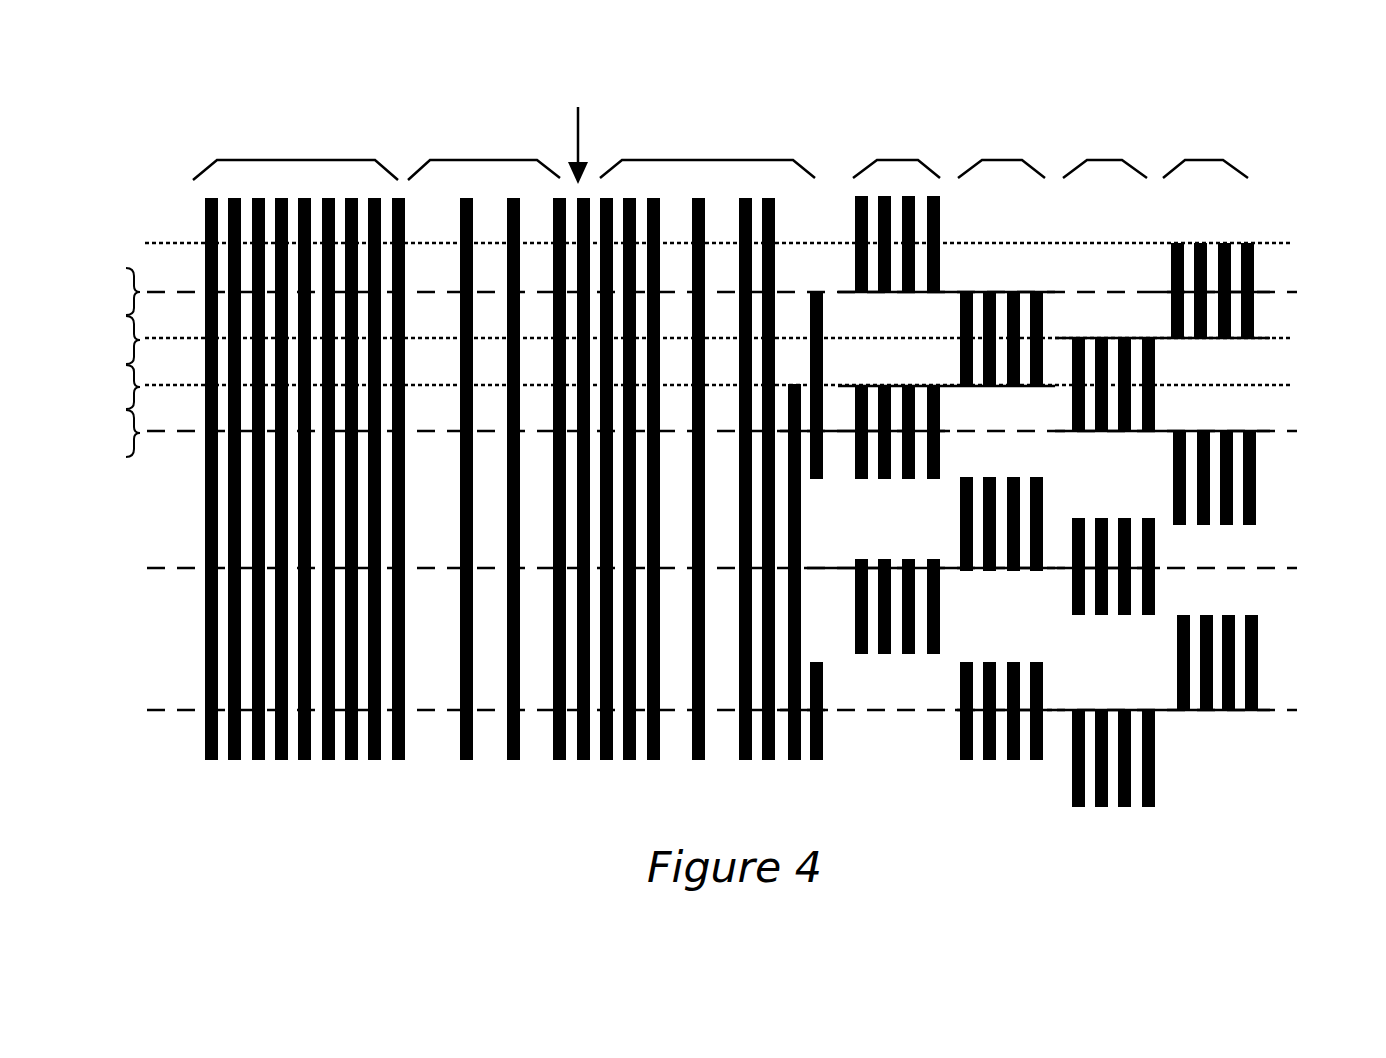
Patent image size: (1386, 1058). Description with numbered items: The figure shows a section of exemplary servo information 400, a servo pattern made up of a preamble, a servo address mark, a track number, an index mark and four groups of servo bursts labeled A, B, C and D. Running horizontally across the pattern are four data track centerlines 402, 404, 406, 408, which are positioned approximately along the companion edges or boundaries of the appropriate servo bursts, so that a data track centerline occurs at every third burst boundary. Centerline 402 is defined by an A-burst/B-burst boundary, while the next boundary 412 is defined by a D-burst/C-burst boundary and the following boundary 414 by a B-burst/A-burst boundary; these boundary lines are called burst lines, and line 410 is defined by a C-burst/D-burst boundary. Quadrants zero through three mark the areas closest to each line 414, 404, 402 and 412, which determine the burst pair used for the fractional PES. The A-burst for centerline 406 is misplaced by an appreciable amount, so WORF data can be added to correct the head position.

The servo information 400 is at (94, 176).
The data track centerline 402 is at (1297, 292).
The data track centerline 404 is at (1297, 431).
The data track centerline 406 is at (1297, 568).
The data track centerline 408 is at (1297, 710).
The burst line 410 is at (1290, 243).
The burst line 412 is at (1290, 338).
The burst line 414 is at (1290, 385).